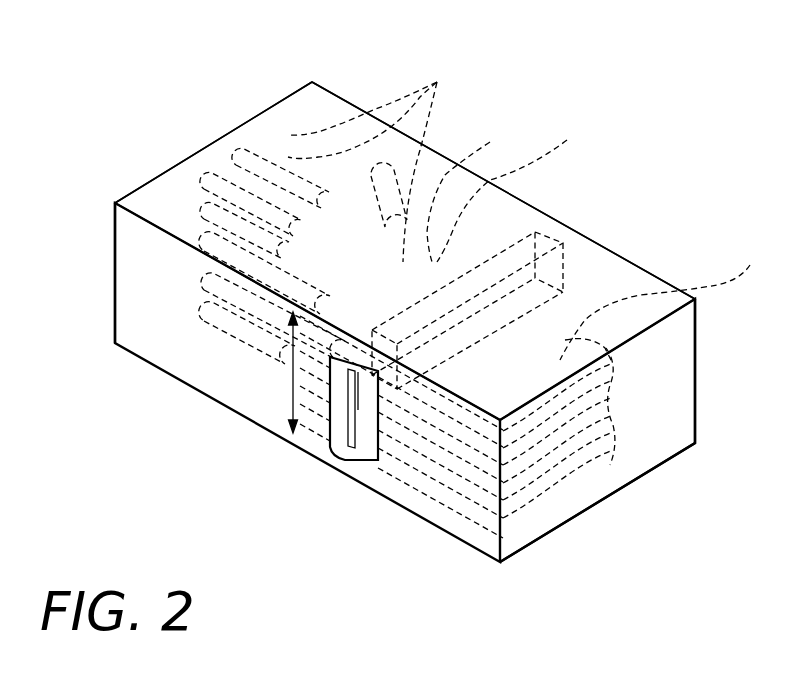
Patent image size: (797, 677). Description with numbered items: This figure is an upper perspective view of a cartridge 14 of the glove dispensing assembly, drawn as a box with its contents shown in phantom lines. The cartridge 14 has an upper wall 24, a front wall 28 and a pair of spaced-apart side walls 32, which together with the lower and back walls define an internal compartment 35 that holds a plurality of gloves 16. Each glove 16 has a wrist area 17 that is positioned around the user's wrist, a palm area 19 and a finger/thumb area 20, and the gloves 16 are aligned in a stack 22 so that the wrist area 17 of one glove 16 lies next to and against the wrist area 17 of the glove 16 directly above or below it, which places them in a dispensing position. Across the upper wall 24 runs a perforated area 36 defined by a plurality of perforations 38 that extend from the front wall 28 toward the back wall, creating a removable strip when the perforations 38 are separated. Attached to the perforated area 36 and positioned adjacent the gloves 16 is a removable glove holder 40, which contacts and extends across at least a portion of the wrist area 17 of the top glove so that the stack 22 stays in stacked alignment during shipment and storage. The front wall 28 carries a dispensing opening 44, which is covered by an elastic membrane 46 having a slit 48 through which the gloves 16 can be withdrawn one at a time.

The cartridge 14 is at (278, 102).
The upper wall 24 is at (327, 100).
The finger/thumb area 20 is at (335, 206).
The palm area 19 is at (490, 142).
The glove 16 is at (567, 140).
The perforations 38 is at (520, 252).
The perforated area 36 is at (520, 263).
The glove holder 40 is at (540, 277).
The wrist area 17 is at (666, 349).
The internal compartment 35 is at (166, 185).
The front wall 28 is at (118, 282).
The stack 22 is at (292, 377).
The elastic membrane 46 is at (337, 412).
The slit 48 is at (350, 430).
The dispensing opening 44 is at (383, 460).
The side walls 32 is at (627, 460).